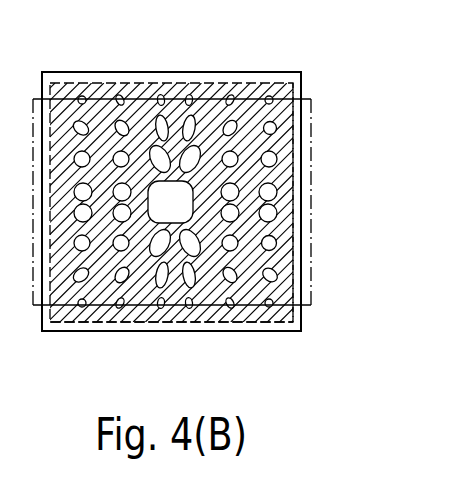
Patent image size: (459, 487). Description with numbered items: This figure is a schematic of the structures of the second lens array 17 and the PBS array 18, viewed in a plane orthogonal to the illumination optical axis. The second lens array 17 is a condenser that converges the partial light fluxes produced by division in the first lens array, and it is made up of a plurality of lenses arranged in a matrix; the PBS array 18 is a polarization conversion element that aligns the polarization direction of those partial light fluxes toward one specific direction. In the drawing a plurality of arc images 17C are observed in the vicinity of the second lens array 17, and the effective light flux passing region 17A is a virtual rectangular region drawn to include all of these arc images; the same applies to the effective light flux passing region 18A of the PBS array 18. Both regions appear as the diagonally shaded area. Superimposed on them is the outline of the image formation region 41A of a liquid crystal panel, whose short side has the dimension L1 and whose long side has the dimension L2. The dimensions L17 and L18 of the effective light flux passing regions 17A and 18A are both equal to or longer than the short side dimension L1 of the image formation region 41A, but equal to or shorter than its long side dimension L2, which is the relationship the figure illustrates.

The second lens array 17 is at (83, 72).
The PBS array 18 is at (171, 171).
The effective light flux passing region 17A is at (240, 83).
The effective light flux passing region 18A is at (176, 162).
The arc images 17C is at (158, 94).
The image formation region 41A is at (287, 72).
The dimension of the short side of the image formation region L1 is at (312, 193).
The dimension of the long side of the image formation region L2 is at (218, 305).
The dimension of the effective light flux passing region of the second lens array L17 is at (300, 123).
The dimension of the effective light flux passing region of the PBS array L18 is at (110, 360).